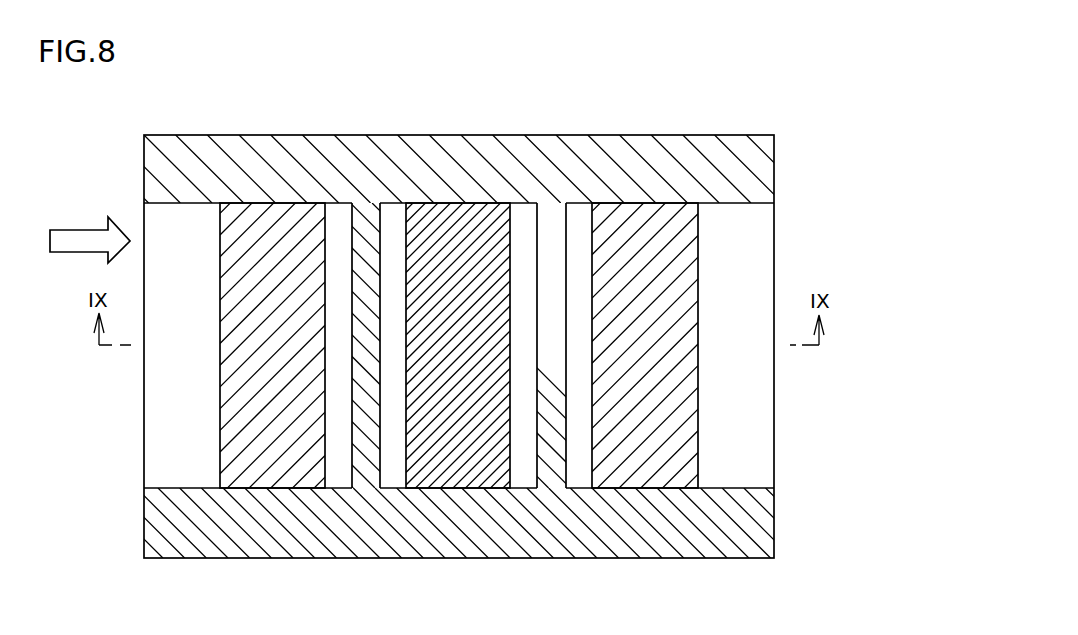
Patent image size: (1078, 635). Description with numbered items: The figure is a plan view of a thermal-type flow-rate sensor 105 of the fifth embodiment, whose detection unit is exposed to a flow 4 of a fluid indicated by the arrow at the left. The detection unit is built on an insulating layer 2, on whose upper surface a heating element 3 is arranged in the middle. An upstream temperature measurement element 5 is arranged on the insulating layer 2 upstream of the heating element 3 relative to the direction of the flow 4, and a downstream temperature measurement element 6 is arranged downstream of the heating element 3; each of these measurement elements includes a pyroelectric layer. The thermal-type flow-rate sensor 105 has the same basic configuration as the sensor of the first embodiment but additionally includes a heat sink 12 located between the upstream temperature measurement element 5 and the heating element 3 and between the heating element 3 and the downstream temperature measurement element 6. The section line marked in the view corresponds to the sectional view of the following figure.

The thermal-type flow-rate sensor 105 is at (789, 106).
The insulating layer 2 is at (757, 251).
The heating element 3 is at (460, 218).
The flow 4 is at (77, 229).
The upstream temperature measurement element 5 is at (273, 218).
The downstream temperature measurement element 6 is at (645, 218).
The heat sink 12 is at (549, 414).